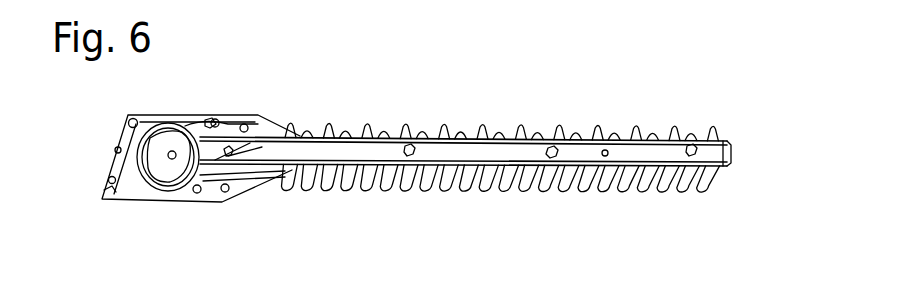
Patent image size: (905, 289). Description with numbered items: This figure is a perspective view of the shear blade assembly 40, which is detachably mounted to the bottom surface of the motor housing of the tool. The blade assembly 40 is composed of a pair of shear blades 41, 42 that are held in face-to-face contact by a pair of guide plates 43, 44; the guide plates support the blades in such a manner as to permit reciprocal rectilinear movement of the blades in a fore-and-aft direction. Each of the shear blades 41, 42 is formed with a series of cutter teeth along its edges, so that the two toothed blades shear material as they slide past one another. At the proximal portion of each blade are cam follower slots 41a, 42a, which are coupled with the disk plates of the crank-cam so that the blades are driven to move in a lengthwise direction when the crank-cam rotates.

The shear blade assembly 40 is at (463, 225).
The shear blade 41 is at (385, 193).
The cam follower slot 41a is at (152, 201).
The shear blade 42 is at (328, 192).
The cam follower slot 42a is at (176, 130).
The guide plate 43 is at (470, 137).
The guide plate 44 is at (214, 203).